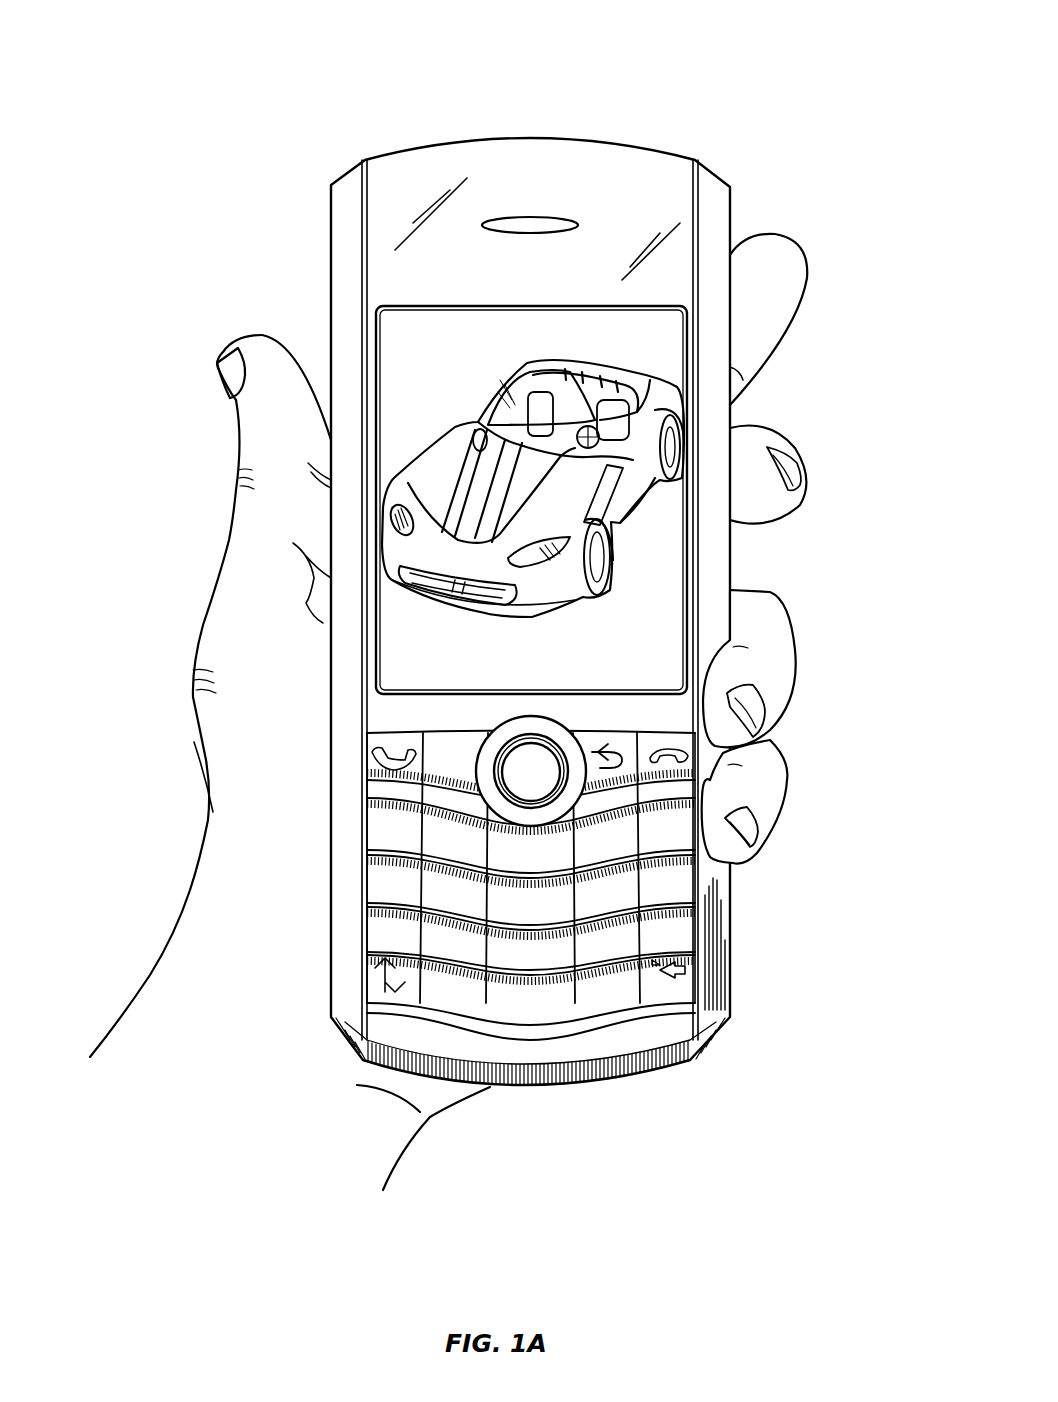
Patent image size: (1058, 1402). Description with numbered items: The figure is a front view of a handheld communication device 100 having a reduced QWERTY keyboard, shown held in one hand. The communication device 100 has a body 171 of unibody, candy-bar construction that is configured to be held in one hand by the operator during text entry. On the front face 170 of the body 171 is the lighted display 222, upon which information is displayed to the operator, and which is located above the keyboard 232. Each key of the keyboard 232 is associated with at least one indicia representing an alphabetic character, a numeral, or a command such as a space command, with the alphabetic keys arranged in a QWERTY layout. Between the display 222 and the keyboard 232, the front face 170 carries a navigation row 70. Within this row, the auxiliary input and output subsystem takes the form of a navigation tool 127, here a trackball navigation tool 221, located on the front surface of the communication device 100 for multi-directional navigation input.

The communication device 100 is at (674, 76).
The body 171 is at (329, 192).
The front face 170 is at (711, 228).
The display 222 is at (404, 353).
The navigation row 70 is at (356, 724).
The trackball navigation tool 221 is at (530, 762).
The navigation tool 127 is at (565, 791).
The keyboard 232 is at (542, 1048).